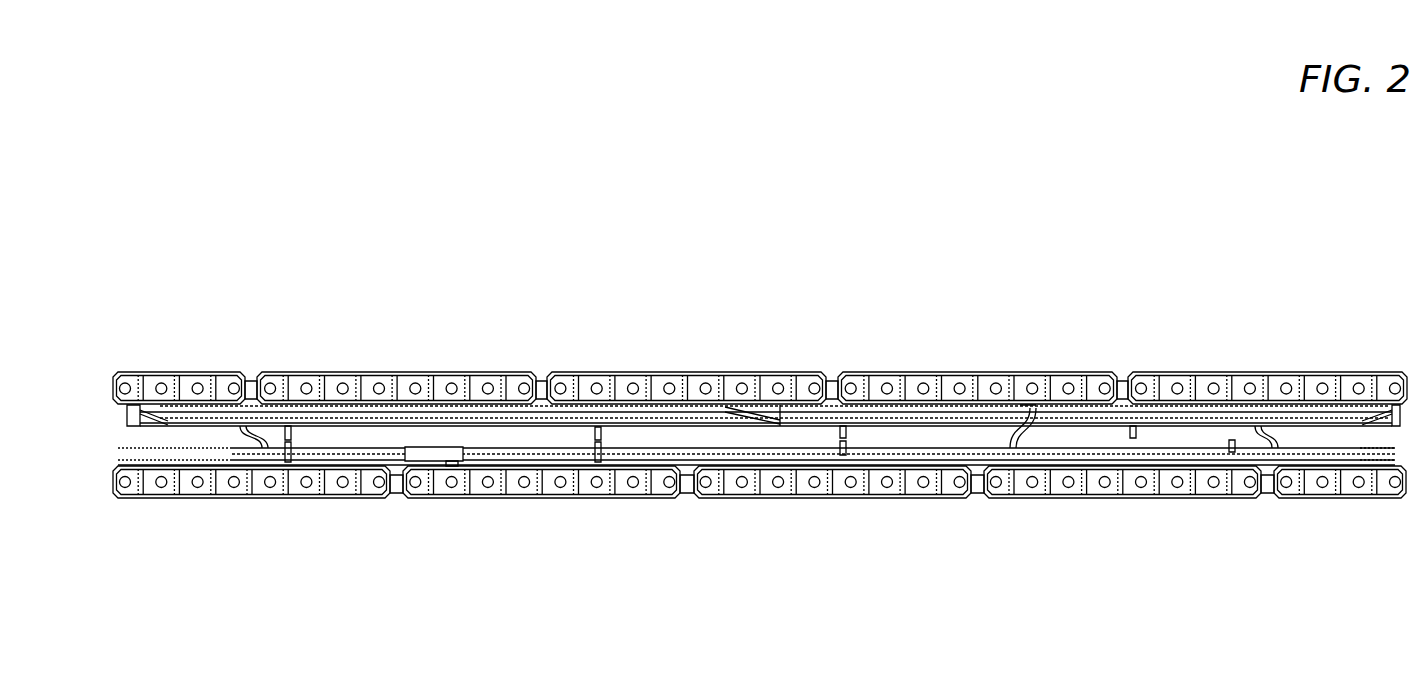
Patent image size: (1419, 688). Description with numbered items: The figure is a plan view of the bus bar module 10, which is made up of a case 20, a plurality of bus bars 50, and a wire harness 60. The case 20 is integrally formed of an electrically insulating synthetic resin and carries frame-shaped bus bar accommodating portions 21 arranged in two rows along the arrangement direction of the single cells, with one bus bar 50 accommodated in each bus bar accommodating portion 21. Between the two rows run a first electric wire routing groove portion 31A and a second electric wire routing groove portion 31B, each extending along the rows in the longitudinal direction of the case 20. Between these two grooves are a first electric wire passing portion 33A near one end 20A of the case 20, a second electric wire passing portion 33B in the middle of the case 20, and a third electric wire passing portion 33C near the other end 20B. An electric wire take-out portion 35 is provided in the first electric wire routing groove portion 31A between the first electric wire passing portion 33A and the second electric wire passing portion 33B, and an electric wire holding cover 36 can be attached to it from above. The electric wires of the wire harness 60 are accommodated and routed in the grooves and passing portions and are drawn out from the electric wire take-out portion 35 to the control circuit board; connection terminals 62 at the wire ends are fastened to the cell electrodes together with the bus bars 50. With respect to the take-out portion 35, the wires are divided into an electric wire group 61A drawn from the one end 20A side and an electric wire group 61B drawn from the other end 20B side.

The bus bar module 10 is at (780, 290).
The case 20 is at (797, 372).
The one end of the case 20A is at (115, 432).
The another end of the case 20B is at (1405, 432).
The bus bar accommodating portion 21 is at (193, 372).
The first electric wire routing groove portion 31A is at (647, 462).
The second electric wire routing groove portion 31B is at (645, 406).
The first electric wire passing portion 33A is at (265, 432).
The second electric wire passing portion 33B is at (1005, 430).
The third electric wire passing portion 33C is at (1260, 435).
The electric wire take-out portion 35 is at (452, 470).
The electric wire holding cover 36 is at (452, 447).
The bus bar 50 is at (218, 372).
The wire harness 60 is at (882, 440).
The electric wire group 61A is at (320, 462).
The electric wire group 61B is at (708, 462).
The connection terminal 62 is at (166, 372).